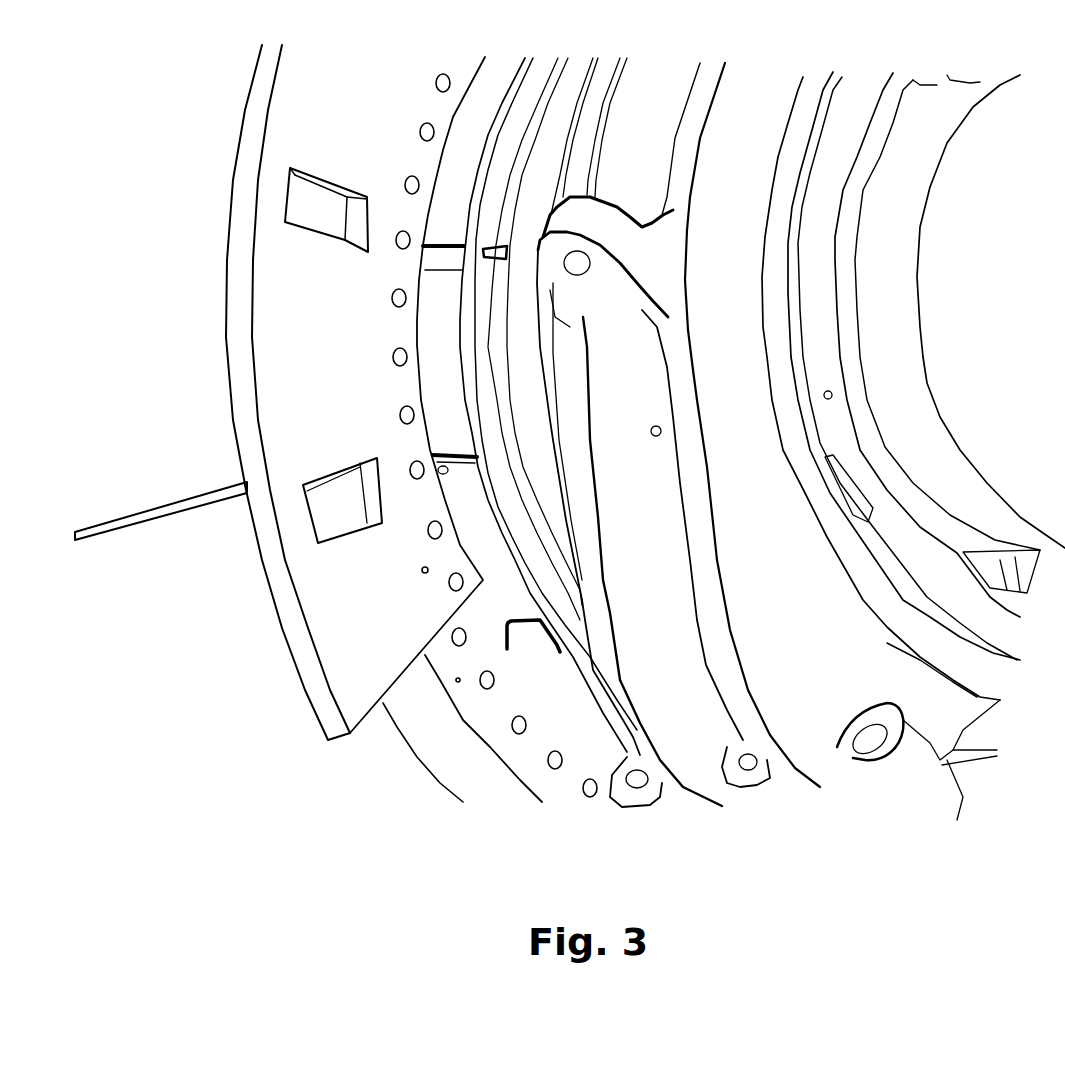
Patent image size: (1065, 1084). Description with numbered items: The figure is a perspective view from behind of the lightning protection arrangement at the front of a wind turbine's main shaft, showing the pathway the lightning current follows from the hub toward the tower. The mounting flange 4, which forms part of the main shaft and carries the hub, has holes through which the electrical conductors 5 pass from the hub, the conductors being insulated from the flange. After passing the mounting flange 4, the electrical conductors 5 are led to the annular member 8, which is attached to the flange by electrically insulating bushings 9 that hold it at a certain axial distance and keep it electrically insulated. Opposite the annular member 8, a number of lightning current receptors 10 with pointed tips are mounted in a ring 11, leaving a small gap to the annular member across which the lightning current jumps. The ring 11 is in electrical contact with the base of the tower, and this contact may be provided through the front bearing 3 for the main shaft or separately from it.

The front bearing 3 is at (795, 640).
The mounting flange 4 is at (505, 613).
The electrical conductors 5 is at (183, 503).
The annular member 8 is at (477, 330).
The electrically insulating bushings 9 is at (447, 236).
The lightning current receptors 10 is at (493, 263).
The ring 11 is at (527, 355).